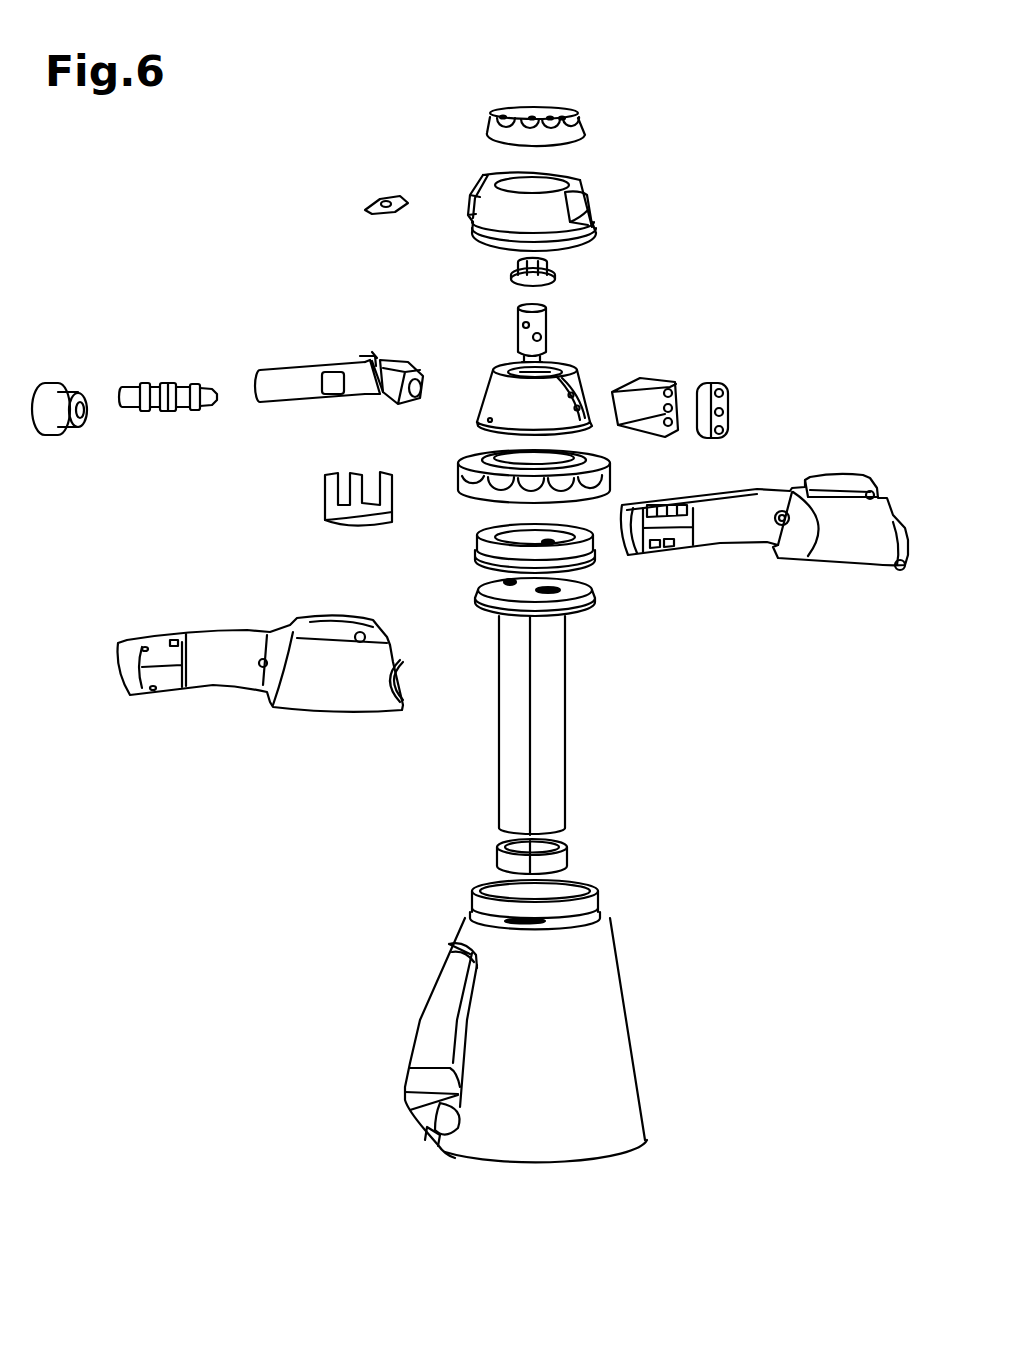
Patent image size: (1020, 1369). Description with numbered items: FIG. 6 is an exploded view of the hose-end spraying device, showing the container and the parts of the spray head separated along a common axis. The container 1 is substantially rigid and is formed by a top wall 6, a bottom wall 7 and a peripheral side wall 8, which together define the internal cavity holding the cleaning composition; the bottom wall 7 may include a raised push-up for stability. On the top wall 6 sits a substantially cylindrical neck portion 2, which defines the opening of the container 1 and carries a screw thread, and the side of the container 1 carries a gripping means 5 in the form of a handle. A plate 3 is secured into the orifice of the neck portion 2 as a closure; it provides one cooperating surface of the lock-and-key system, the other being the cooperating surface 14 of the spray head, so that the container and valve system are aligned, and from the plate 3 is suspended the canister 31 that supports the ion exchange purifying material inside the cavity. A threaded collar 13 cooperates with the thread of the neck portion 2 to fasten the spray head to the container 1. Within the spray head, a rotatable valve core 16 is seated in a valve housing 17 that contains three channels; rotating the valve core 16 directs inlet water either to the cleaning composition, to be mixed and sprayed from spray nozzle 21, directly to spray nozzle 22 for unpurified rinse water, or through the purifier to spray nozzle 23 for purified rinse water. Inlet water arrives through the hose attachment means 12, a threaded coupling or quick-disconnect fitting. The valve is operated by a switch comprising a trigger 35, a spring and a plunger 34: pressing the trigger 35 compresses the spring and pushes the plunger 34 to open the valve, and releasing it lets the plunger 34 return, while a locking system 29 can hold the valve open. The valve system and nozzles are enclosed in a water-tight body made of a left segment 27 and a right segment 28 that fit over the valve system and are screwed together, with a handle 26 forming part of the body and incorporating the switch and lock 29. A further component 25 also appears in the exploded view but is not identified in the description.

The container 1 is at (532, 1050).
The neck portion 2 is at (597, 905).
The plate 3 is at (590, 598).
The gripping means 5 is at (424, 1050).
The top wall 6 is at (472, 912).
The bottom wall 7 is at (598, 1165).
The peripheral side wall 8 is at (646, 1100).
The hose attachment means 12 is at (50, 388).
The threaded collar 13 is at (606, 476).
The spray head cooperating surface 14 is at (478, 548).
The valve core 16 is at (543, 322).
The valve housing 17 is at (545, 390).
The spray nozzle 21 is at (730, 432).
The spray nozzle 22 is at (730, 414).
The spray nozzle 23 is at (730, 389).
The top cap 25 is at (548, 118).
The handle 26 is at (285, 380).
The left body segment 27 is at (848, 532).
The right body segment 28 is at (322, 688).
The locking system 29 is at (385, 198).
The canister 31 is at (563, 858).
The plunger 34 is at (165, 388).
The trigger 35 is at (330, 505).